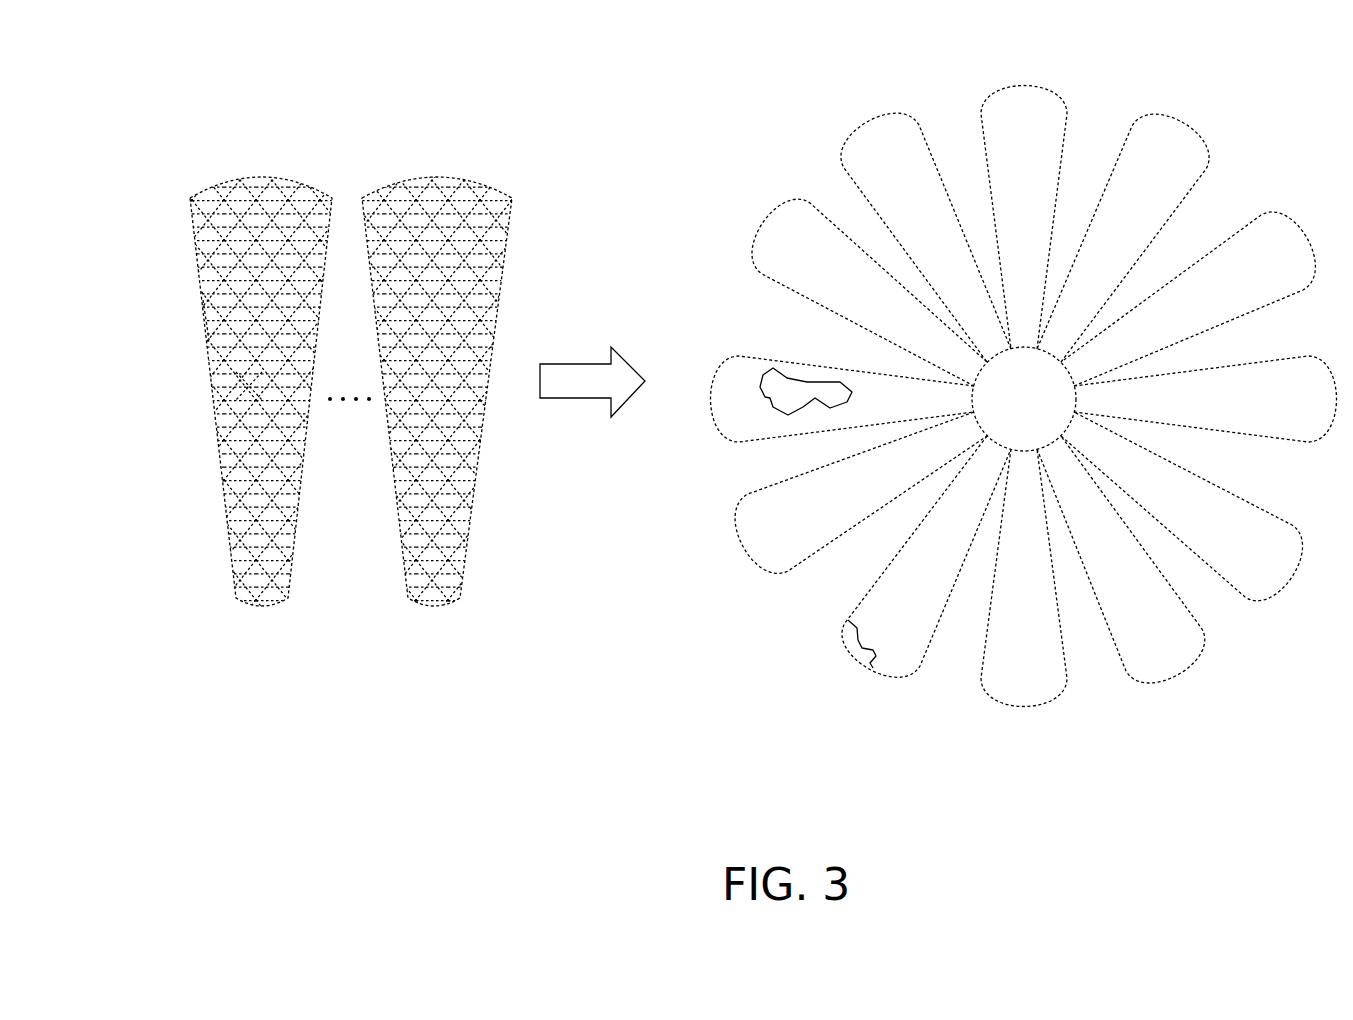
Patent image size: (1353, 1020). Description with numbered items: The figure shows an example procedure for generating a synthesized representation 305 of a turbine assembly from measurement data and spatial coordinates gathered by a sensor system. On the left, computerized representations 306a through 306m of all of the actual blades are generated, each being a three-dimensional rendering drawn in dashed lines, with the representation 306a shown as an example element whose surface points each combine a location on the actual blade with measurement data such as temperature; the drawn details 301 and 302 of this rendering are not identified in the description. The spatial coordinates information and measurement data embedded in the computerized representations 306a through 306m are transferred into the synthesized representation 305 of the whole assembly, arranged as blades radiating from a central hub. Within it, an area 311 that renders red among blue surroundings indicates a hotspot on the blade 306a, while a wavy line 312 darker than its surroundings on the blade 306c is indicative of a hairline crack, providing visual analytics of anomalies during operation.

The petal outer edge / wall 301 is at (207, 327).
The mesh structure 302 is at (246, 385).
The synthesized representation 305 is at (1122, 57).
The computerized representation 306a is at (262, 150).
The computerized representation 306c is at (866, 594).
The computerized representation 306m is at (431, 150).
The area 311 is at (773, 368).
The wavy line 312 is at (855, 657).